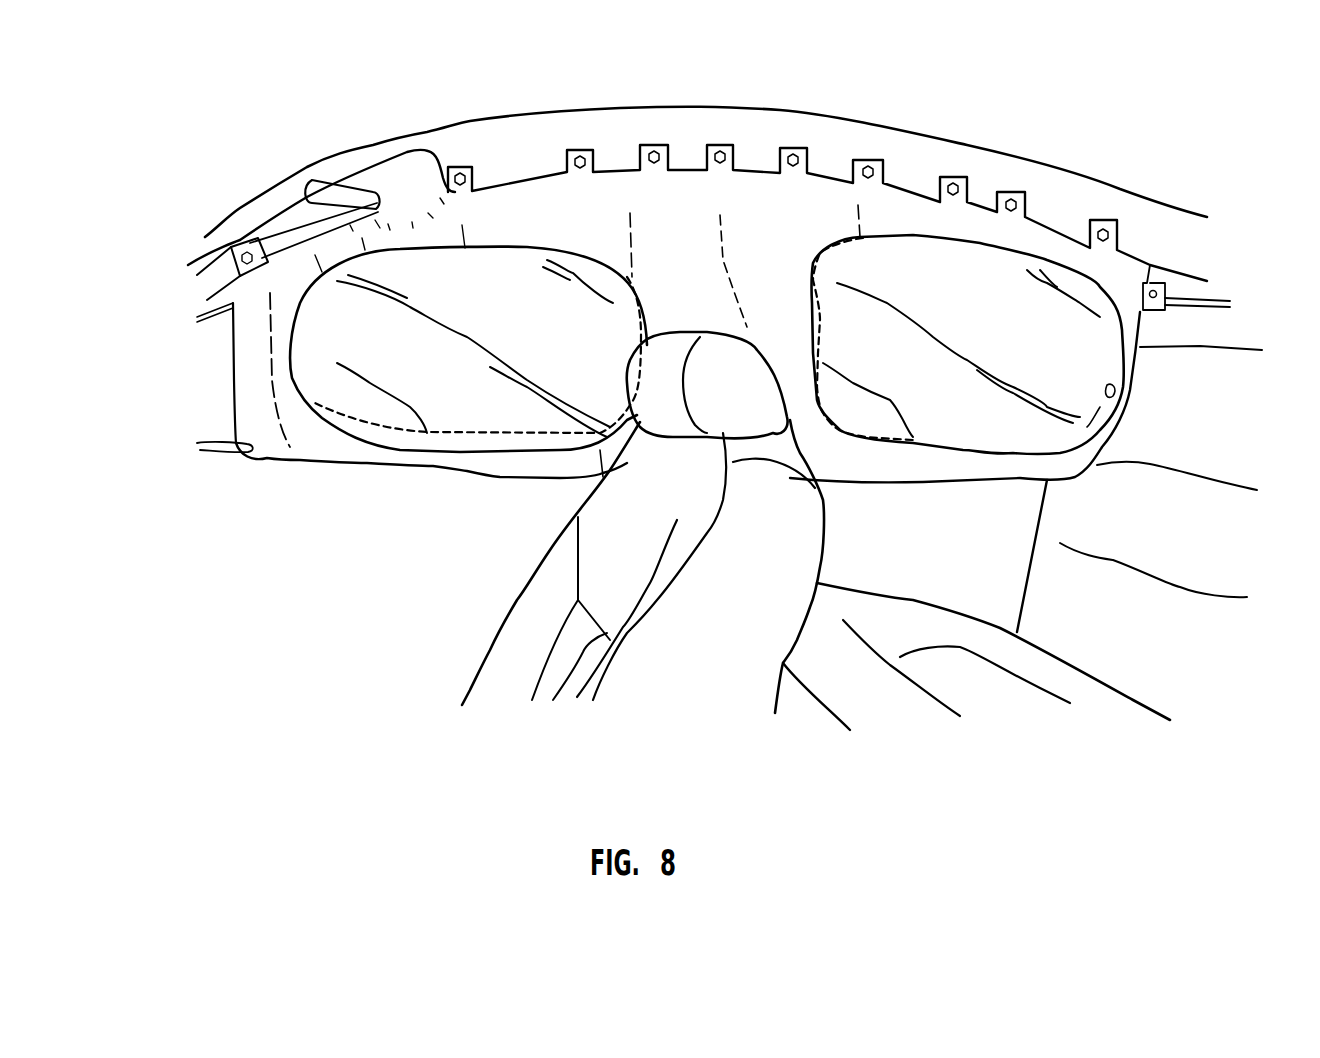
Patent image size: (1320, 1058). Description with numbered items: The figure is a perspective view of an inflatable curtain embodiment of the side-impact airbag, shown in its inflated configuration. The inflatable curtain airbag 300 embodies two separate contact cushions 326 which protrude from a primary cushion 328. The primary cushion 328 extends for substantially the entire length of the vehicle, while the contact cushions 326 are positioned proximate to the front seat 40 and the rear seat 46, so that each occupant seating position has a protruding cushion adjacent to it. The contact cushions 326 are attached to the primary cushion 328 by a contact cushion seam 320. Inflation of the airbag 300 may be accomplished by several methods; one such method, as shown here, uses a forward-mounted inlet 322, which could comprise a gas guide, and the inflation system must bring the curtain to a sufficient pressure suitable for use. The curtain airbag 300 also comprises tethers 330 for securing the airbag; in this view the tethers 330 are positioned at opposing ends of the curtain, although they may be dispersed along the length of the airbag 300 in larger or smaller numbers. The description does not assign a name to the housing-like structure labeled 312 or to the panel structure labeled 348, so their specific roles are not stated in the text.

The front seat 40 is at (618, 533).
The rear seat 46 is at (890, 706).
The inflatable curtain airbag 300 is at (458, 483).
The housing 312 is at (303, 445).
The contact cushion seam 320 is at (655, 302).
The forward-mounted inlet 322 is at (273, 217).
The contact cushion 326 is at (330, 353).
The primary cushion 328 is at (805, 213).
The tether 330 is at (222, 452).
The instrument panel 348 is at (563, 133).